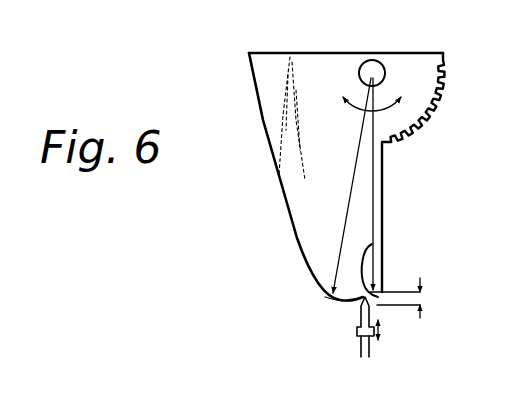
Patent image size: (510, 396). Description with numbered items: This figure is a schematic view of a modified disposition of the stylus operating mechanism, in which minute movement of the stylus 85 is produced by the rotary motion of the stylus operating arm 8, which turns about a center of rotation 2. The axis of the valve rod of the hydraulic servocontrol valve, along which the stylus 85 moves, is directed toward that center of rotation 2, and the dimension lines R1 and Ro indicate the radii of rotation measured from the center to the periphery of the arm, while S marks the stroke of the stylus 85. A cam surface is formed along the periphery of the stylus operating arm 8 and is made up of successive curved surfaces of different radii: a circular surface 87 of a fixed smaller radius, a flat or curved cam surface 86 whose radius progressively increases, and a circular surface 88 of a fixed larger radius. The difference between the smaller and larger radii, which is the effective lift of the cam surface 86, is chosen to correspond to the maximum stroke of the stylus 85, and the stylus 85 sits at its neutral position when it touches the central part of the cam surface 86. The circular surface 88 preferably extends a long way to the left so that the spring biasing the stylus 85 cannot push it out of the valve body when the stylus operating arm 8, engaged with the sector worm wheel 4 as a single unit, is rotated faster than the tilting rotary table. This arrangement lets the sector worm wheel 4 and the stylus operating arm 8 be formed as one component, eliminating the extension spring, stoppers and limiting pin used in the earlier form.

The pivot axis of grinding wheel 2 is at (375, 63).
The sector worm wheel 4 is at (425, 60).
The stylus operating arm 8 is at (297, 242).
The stylus 85 is at (356, 322).
The cam surface 86 is at (372, 244).
The circular surface of a fixed smaller radius 87 is at (382, 290).
The circular surface of a fixed larger radius 88 is at (347, 301).
The inner radius R1 is at (349, 200).
The outer radius Ro is at (373, 183).
The gap S is at (410, 298).